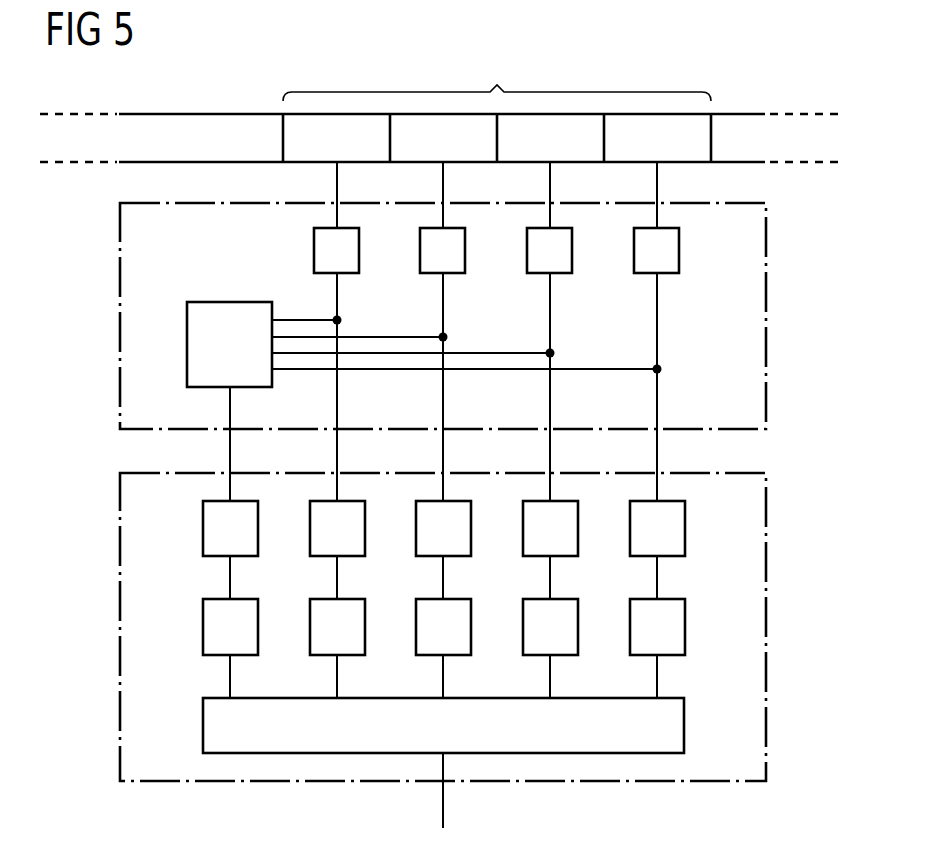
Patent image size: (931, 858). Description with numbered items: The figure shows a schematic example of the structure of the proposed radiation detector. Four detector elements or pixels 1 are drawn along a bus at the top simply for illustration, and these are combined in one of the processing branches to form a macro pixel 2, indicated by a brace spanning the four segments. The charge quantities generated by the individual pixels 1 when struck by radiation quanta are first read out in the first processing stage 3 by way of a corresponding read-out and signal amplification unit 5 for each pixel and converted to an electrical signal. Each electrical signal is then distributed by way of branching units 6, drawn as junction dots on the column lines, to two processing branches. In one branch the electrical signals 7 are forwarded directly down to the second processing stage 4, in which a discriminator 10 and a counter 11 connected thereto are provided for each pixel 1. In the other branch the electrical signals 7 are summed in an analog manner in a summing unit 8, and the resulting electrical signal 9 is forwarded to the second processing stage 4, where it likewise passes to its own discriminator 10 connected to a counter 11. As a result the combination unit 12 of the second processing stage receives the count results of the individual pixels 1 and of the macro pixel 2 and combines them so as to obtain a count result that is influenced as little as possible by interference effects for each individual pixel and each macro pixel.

The detector element or pixel 1 is at (697, 138).
The macro pixel 2 is at (497, 77).
The first processing stage 3 is at (768, 312).
The second processing stage 4 is at (768, 642).
The read-out and signal amplification unit 5 is at (314, 250).
The branching unit 6 is at (662, 370).
The electrical signal 7 is at (659, 404).
The summing unit 8 is at (231, 302).
The resulting electrical signal 9 is at (229, 402).
The discriminator 10 is at (203, 528).
The counter 11 is at (203, 626).
The combination unit 12 is at (203, 726).